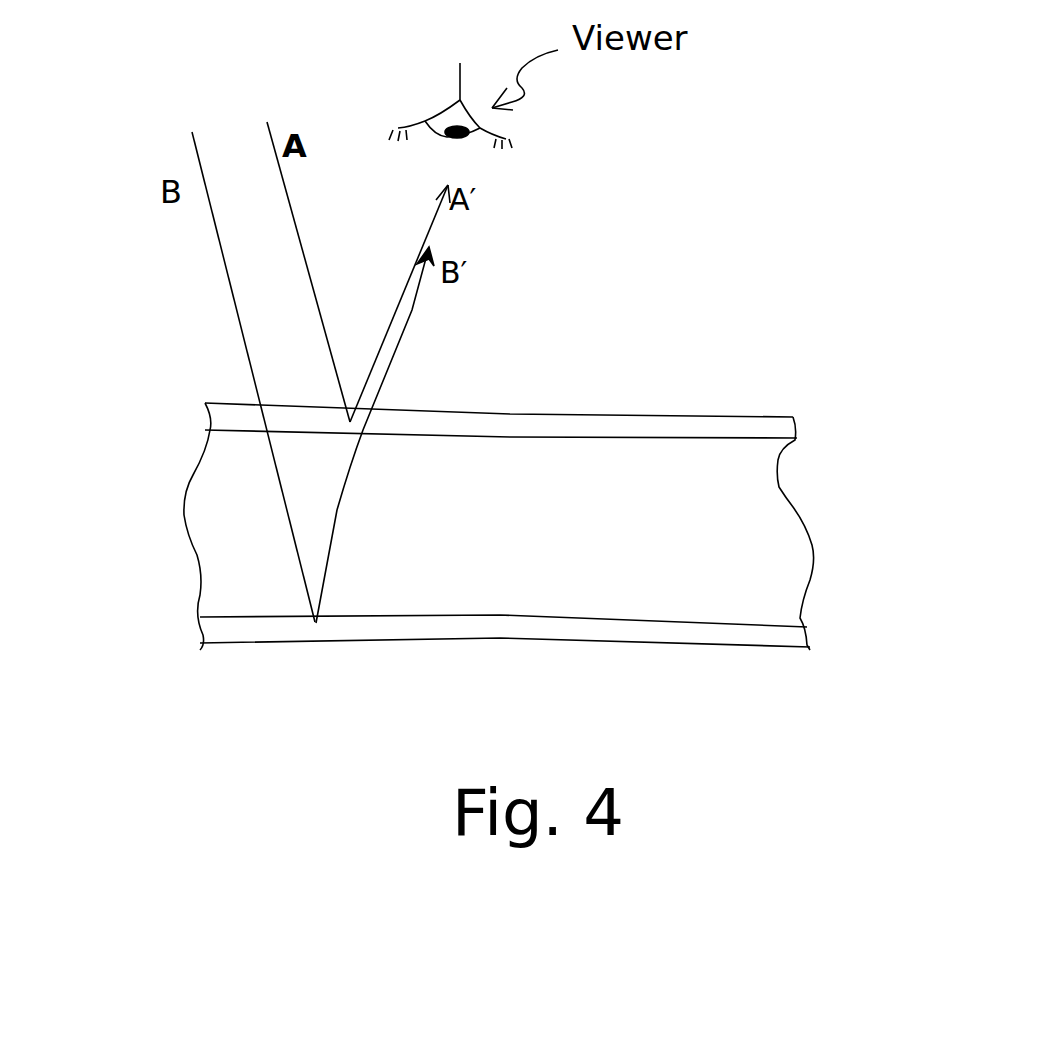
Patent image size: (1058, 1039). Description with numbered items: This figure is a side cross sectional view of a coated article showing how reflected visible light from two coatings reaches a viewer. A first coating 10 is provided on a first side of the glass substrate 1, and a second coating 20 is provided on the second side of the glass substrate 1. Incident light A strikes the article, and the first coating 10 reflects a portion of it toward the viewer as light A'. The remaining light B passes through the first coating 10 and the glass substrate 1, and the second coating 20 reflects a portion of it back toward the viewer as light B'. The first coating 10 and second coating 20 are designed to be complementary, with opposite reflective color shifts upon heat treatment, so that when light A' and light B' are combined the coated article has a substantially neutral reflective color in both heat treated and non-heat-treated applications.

The glass substrate 1 is at (790, 550).
The first coating 10 is at (215, 414).
The second coating 20 is at (212, 628).